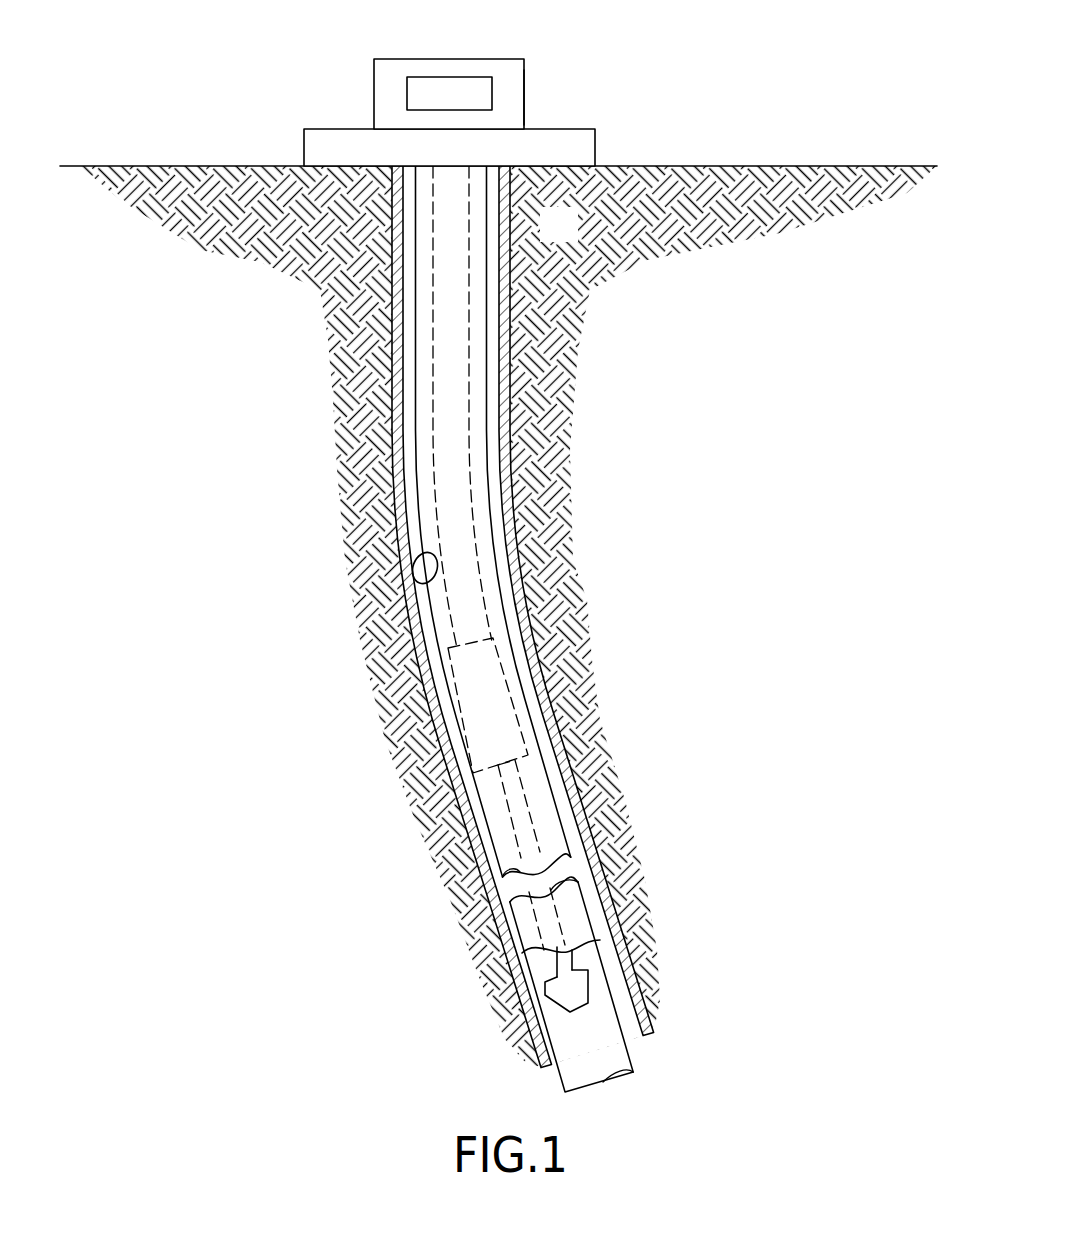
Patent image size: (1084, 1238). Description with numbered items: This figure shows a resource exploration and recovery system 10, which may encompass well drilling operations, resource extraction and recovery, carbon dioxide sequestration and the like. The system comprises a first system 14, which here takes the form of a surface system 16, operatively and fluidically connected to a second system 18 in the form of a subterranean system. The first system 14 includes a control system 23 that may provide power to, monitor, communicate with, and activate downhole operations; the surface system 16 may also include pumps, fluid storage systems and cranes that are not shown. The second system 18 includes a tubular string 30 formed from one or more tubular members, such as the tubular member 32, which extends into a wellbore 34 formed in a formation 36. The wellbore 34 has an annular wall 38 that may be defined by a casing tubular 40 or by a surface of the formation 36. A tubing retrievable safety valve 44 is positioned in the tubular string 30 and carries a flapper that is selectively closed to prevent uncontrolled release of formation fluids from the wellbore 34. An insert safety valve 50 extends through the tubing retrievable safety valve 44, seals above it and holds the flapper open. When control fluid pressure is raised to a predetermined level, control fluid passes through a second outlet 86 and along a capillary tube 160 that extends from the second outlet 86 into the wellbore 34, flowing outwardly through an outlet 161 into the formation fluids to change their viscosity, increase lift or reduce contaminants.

The resource exploration and recovery system 10 is at (682, 137).
The first system 14 is at (357, 79).
The surface system 16 is at (527, 95).
The second system 18 is at (193, 373).
The control system 23 is at (430, 88).
The tubular string 30 is at (405, 347).
The tubular member 32 is at (412, 275).
The wellbore 34 is at (505, 908).
The formation 36 is at (575, 238).
The annular wall 38 is at (412, 575).
The casing tubular 40 is at (420, 633).
The tubing retrievable safety valve 44 is at (525, 695).
The insert safety valve 50 is at (505, 637).
The second outlet 86 is at (503, 773).
The capillary tube 160 is at (560, 960).
The outlet 161 is at (573, 987).